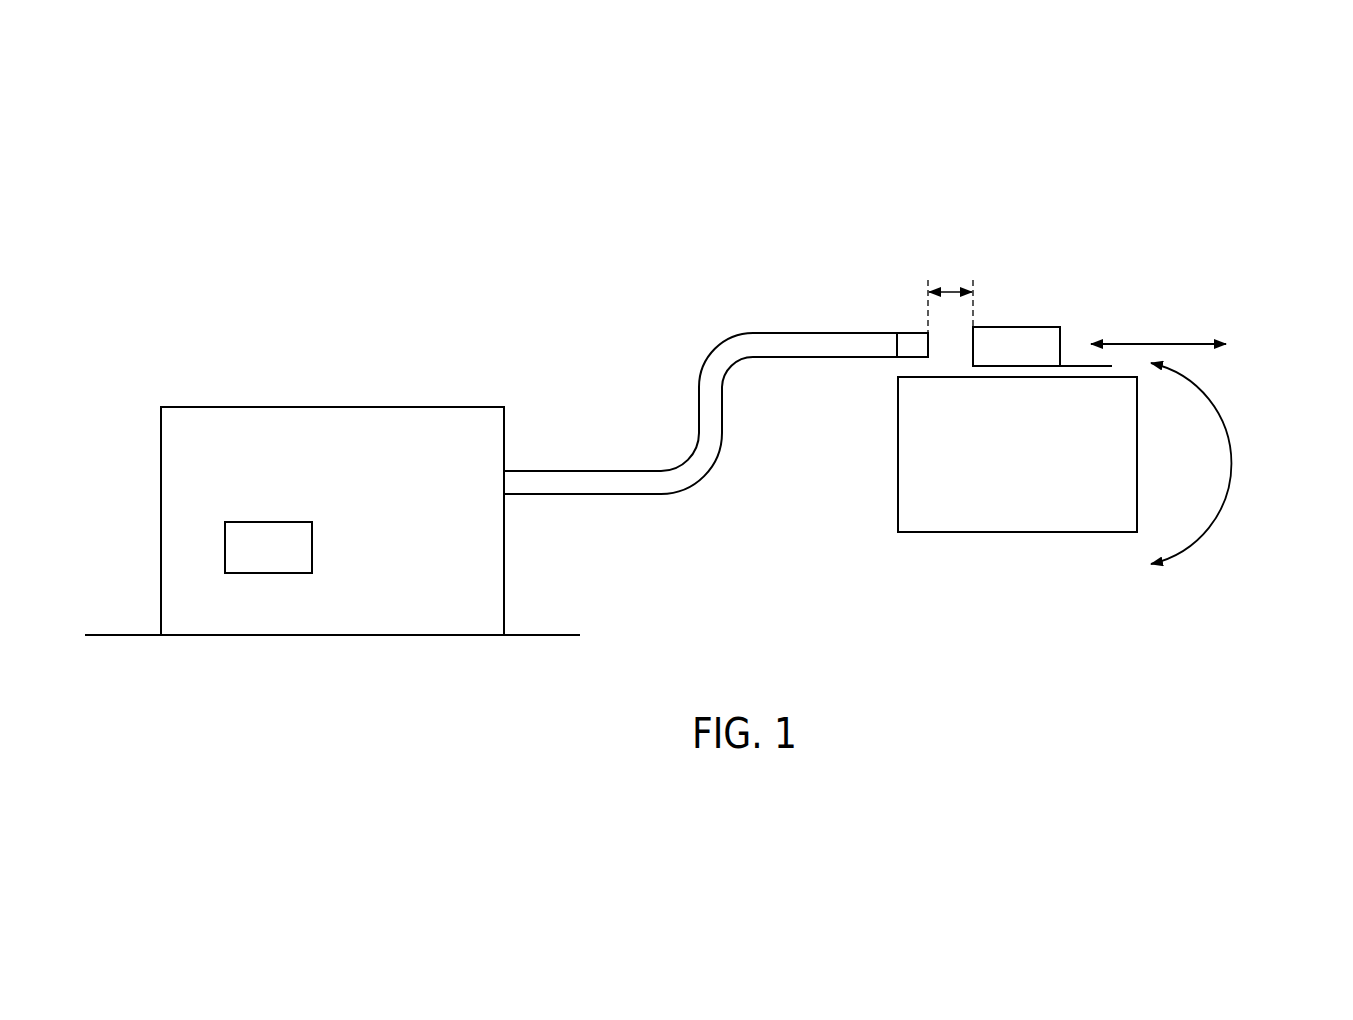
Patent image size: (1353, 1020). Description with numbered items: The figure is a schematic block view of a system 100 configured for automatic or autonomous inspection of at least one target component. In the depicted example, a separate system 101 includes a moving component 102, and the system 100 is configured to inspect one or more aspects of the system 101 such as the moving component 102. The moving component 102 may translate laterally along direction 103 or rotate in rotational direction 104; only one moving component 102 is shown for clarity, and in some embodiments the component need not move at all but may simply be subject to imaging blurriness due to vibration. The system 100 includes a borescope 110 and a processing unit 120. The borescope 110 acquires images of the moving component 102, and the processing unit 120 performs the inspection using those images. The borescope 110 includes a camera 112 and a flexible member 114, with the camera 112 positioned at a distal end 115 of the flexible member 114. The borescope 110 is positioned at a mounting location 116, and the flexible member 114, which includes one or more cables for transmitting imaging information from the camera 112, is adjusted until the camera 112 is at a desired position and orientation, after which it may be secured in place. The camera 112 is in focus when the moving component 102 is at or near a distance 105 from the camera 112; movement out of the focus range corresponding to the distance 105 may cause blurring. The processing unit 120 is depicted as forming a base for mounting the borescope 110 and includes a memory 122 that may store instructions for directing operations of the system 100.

The system 100 is at (556, 241).
The system 101 is at (1035, 464).
The moving component 102 is at (1035, 356).
The direction 103 is at (1157, 340).
The rotational direction 104 is at (1238, 455).
The distance 105 is at (952, 290).
The borescope 110 is at (1012, 168).
The camera 112 is at (913, 332).
The flexible member 114 is at (784, 331).
The distal end 115 is at (895, 316).
The mounting location 116 is at (545, 640).
The processing unit 120 is at (328, 405).
The memory 122 is at (287, 558).